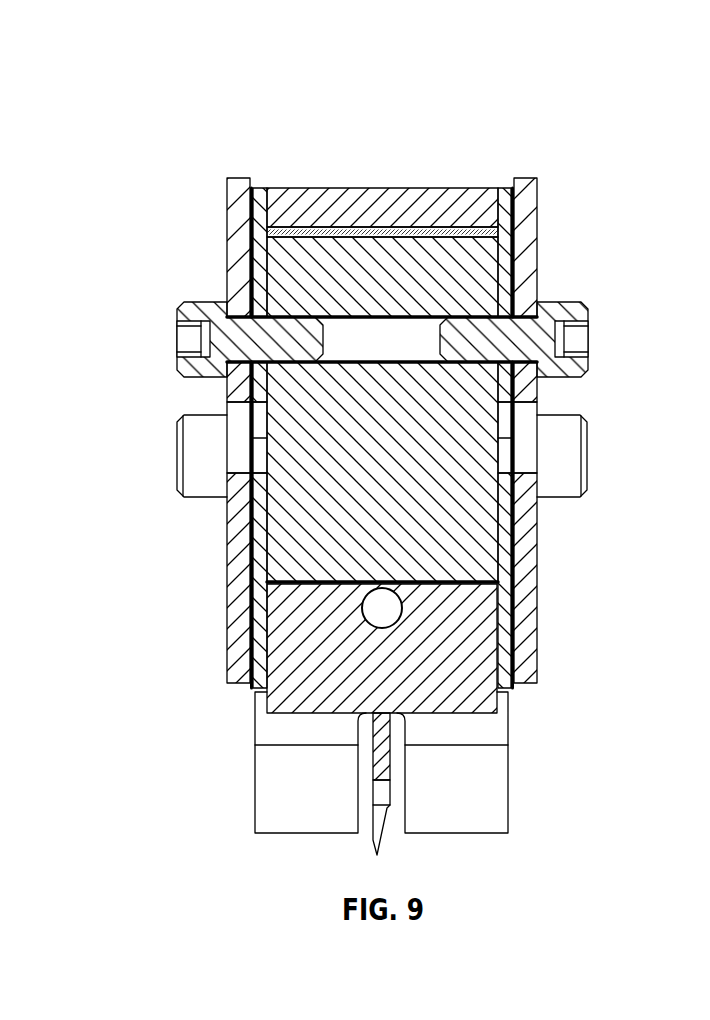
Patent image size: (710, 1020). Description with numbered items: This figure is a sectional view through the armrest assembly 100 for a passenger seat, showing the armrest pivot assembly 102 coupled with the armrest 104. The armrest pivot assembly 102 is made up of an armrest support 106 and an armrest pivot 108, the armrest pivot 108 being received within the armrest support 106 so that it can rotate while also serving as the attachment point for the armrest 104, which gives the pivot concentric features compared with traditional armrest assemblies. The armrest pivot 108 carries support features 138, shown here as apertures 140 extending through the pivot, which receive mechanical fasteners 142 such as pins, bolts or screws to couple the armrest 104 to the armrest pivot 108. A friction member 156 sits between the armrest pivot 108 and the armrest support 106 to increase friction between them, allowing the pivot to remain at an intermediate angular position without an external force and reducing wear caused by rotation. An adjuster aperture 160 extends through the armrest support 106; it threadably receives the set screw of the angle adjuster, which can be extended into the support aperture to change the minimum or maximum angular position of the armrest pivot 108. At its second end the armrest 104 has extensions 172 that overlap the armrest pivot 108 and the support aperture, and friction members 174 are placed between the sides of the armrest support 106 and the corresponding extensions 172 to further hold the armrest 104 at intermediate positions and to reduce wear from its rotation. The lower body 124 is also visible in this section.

The armrest assembly 100 is at (254, 118).
The armrest pivot assembly 102 is at (372, 79).
The armrest 104 is at (228, 181).
The armrest support 106 is at (468, 770).
The armrest pivot 108 is at (275, 253).
The lower body 124 is at (313, 638).
The support feature 138 is at (385, 333).
The aperture 140 is at (333, 327).
The mechanical fastener 142 is at (195, 302).
The friction member 156 is at (453, 235).
The adjuster aperture 160 is at (386, 619).
The extension 172 is at (525, 585).
The friction member 174 is at (505, 500).